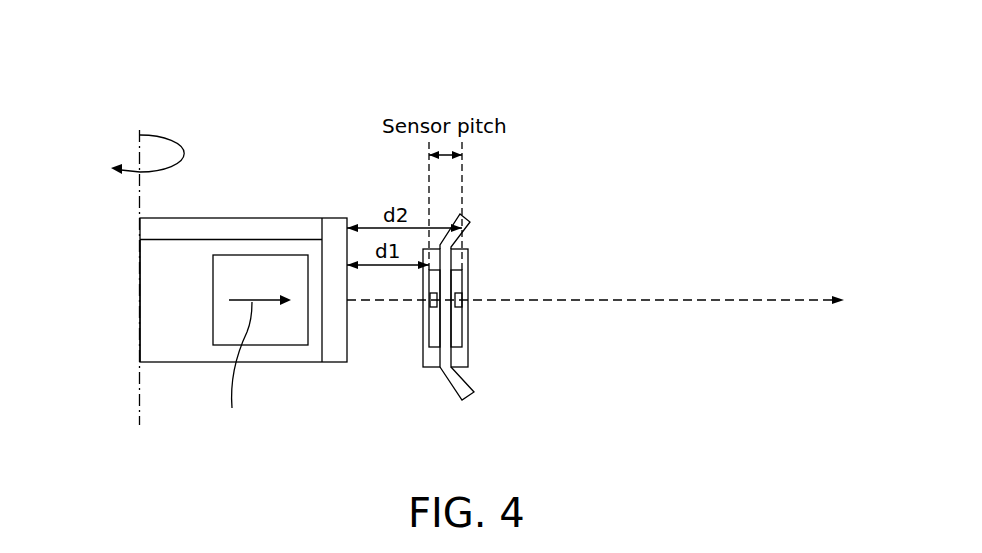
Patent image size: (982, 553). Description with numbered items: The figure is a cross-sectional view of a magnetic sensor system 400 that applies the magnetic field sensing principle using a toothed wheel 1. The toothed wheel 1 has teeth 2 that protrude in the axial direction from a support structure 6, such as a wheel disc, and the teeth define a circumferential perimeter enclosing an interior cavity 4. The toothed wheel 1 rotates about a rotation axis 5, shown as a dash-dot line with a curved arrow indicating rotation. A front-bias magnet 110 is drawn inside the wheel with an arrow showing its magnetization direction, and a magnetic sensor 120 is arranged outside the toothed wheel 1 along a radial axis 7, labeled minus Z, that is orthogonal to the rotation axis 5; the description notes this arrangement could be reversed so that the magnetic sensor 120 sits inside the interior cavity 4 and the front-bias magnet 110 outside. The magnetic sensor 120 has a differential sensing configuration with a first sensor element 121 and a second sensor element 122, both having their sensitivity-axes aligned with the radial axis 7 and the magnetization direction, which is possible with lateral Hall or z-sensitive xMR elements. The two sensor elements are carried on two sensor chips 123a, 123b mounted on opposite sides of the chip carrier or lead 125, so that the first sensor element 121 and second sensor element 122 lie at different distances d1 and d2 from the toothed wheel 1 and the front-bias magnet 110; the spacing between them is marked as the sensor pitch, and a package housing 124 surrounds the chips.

The magnetic sensor system 400 is at (121, 31).
The toothed wheel 1 is at (235, 203).
The teeth 2 is at (338, 363).
The interior cavity 4 is at (152, 286).
The rotation axis 5 is at (140, 154).
The support structure 6 is at (257, 218).
The radial axis 7 is at (640, 300).
The front-bias magnet 110 is at (265, 322).
The magnetic sensor 120 is at (477, 239).
The first sensor element 121 is at (433, 306).
The second sensor element 122 is at (458, 307).
The sensor chip 123a is at (437, 335).
The sensor chip 123b is at (455, 338).
The package housing 124 is at (470, 287).
The lead 125 is at (465, 380).